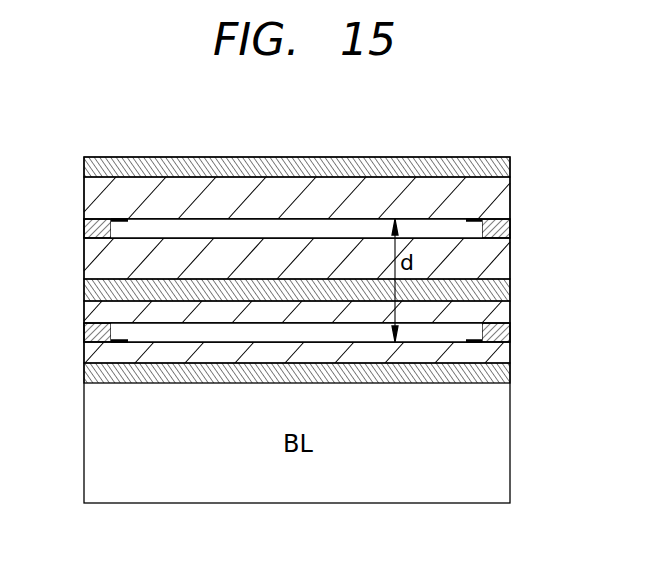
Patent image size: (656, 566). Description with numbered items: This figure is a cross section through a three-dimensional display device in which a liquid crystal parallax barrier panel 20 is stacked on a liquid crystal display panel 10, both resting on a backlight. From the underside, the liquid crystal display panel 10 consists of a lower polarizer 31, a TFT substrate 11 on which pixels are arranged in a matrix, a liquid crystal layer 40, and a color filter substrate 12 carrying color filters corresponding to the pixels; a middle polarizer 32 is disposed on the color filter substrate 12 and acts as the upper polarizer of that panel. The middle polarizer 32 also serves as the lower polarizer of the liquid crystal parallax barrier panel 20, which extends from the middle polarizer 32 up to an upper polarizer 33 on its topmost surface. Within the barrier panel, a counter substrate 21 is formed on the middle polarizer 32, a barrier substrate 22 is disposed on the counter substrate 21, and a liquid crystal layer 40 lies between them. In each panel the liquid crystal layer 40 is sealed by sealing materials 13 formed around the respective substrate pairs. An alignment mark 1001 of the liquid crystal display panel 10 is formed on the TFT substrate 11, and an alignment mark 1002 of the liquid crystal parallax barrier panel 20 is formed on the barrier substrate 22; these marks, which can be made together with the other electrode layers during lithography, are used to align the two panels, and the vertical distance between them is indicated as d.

The liquid crystal display panel 10 is at (353, 332).
The TFT substrate 11 is at (324, 358).
The color filter substrate 12 is at (511, 302).
The sealing materials 13 is at (511, 226).
The liquid crystal parallax barrier panel 20 is at (352, 228).
The counter substrate 21 is at (324, 258).
The barrier substrate 22 is at (511, 195).
The lower polarizer 31 is at (84, 374).
The middle polarizer 32 is at (84, 289).
The upper polarizer 33 is at (84, 165).
The liquid crystal layer 40 is at (152, 233).
The alignment mark 1001 is at (121, 344).
The alignment mark 1002 is at (122, 218).